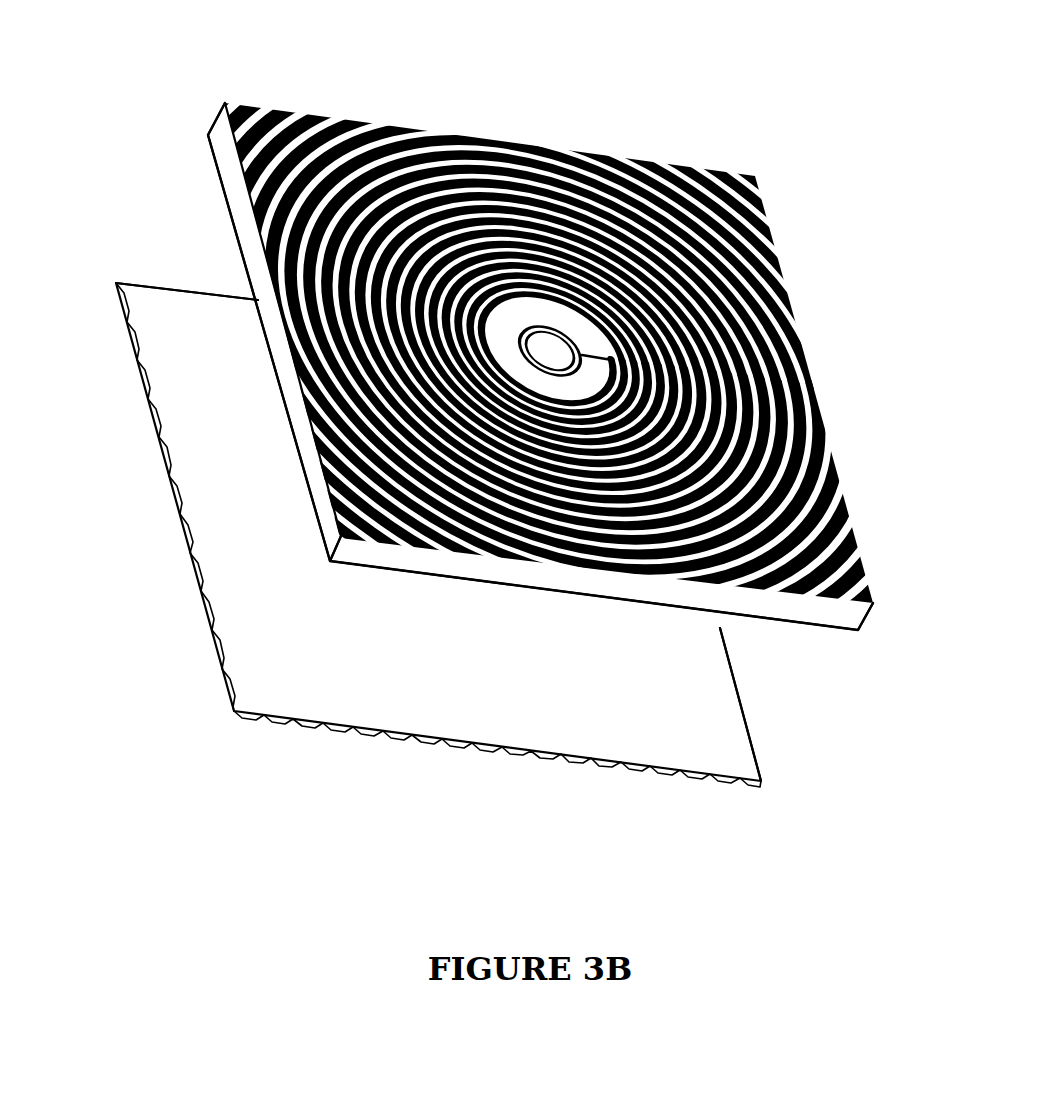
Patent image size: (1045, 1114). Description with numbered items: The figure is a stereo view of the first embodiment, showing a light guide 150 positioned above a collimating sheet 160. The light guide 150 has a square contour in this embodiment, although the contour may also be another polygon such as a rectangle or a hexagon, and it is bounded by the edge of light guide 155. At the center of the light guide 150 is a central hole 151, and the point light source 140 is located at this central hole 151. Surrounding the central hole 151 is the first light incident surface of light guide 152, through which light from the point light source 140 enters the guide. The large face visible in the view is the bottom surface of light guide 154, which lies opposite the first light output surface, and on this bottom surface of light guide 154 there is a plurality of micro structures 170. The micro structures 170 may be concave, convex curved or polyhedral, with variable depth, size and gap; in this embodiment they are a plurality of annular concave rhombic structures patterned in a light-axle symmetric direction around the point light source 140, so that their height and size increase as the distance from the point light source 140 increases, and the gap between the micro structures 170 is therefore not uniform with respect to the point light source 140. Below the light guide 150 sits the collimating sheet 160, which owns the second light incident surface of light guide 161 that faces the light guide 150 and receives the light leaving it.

The point light source 140 is at (545, 347).
The light guide 150 is at (817, 347).
The central hole 151 is at (533, 320).
The first light incident surface of light guide 152 is at (577, 350).
The bottom surface of light guide 154 is at (500, 317).
The edge of light guide 155 is at (305, 470).
The collimating sheet 160 is at (450, 770).
The second light incident surface of light guide 161 is at (187, 420).
The micro structures 170 is at (750, 180).